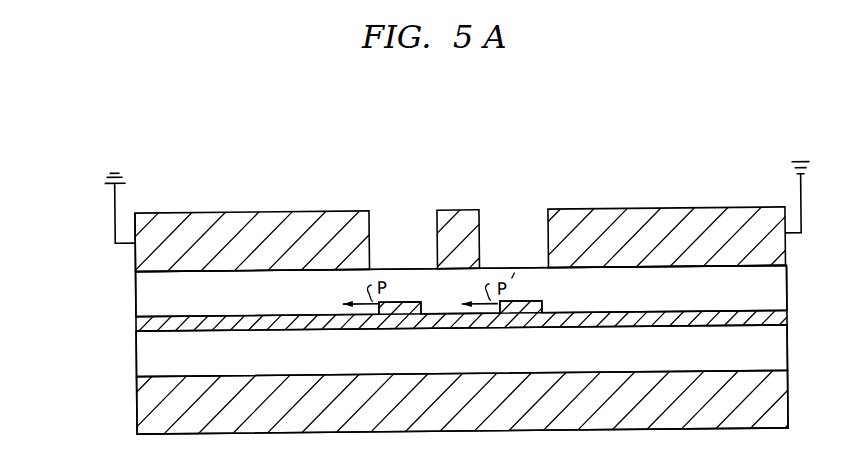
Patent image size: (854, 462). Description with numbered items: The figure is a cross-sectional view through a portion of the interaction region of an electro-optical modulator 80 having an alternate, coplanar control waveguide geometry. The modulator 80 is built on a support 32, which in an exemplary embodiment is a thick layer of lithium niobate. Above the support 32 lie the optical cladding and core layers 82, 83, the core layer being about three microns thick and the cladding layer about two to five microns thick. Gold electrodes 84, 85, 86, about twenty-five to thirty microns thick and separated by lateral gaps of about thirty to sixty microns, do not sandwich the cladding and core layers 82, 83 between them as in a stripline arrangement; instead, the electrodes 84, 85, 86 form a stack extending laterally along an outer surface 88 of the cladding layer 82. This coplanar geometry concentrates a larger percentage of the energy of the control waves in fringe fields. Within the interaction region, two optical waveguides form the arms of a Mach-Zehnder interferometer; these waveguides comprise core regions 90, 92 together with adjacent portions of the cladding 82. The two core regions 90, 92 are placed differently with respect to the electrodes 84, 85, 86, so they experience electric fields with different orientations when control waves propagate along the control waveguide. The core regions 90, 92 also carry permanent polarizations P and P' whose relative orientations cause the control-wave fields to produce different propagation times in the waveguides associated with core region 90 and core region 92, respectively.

The electro-optical modulator 80 is at (85, 163).
The gold electrode 84 is at (204, 210).
The gold electrode 85 is at (472, 210).
The gold electrode 86 is at (722, 212).
The outer surface of the cladding layer 88 is at (416, 268).
The cladding layer 82 is at (136, 289).
The core layer 83 is at (136, 324).
The core region 90 is at (427, 302).
The core region 92 is at (542, 304).
The support 32 is at (136, 401).